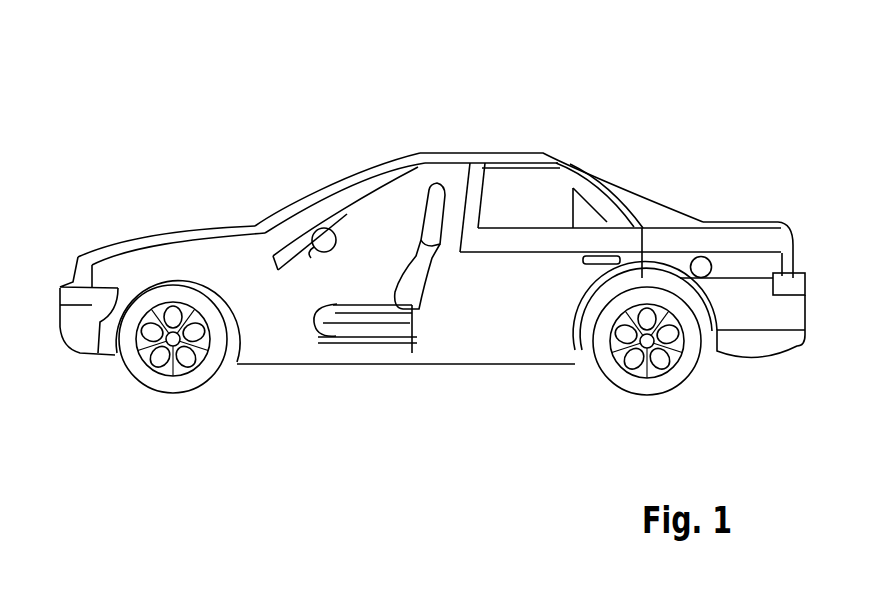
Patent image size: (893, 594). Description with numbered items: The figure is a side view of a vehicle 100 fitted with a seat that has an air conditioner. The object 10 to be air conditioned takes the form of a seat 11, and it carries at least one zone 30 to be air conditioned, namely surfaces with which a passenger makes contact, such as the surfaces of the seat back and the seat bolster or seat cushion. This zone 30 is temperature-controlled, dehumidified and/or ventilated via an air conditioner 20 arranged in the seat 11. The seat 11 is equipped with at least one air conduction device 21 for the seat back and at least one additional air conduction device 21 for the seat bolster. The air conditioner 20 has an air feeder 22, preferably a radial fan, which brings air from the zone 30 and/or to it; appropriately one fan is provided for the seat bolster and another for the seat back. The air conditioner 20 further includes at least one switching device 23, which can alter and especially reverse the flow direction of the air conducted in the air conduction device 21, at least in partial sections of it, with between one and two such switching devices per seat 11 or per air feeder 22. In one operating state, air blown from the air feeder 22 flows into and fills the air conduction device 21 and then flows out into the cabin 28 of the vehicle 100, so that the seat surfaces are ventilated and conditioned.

The vehicle 100 is at (716, 186).
The object to be air conditioned 10 is at (277, 240).
The seat 11 is at (418, 290).
The cabin 28 is at (385, 212).
The zone to be air conditioned 30 is at (399, 267).
The air conditioner 20 is at (340, 307).
The air conduction device 21 is at (405, 262).
The air feeder 22 is at (417, 350).
The switching device 23 is at (364, 315).